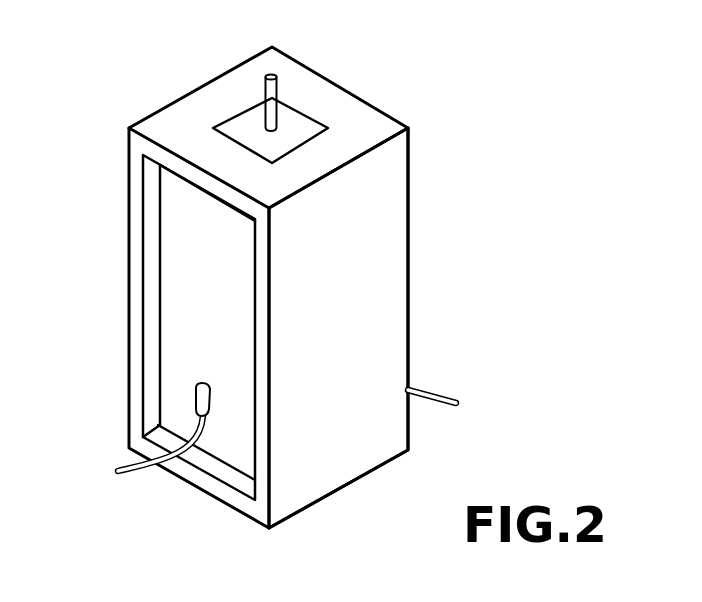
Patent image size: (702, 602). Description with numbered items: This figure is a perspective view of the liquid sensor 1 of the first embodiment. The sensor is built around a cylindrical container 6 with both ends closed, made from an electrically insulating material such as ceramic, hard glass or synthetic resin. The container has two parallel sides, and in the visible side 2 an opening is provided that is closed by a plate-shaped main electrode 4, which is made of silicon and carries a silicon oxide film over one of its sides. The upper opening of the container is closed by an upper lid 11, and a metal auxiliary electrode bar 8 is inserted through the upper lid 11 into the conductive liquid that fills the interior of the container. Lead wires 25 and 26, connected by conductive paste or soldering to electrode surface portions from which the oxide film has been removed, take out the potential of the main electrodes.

The liquid sensor 1 is at (320, 50).
The side 2 is at (133, 193).
The plate-shaped main electrode 4 is at (175, 317).
The cylindrical container 6 is at (378, 240).
The metal auxiliary electrode bar 8 is at (267, 80).
The upper lid 11 is at (310, 127).
The lead wire 25 is at (127, 462).
The lead wire 26 is at (437, 395).